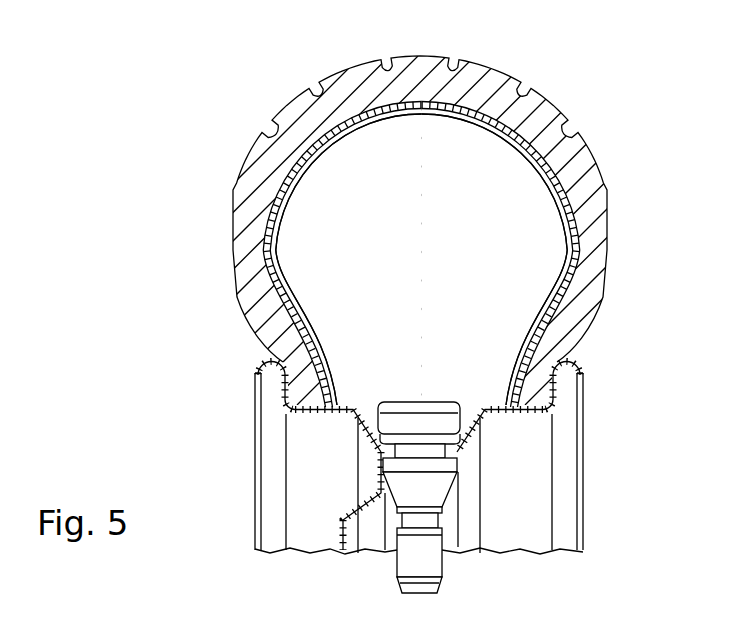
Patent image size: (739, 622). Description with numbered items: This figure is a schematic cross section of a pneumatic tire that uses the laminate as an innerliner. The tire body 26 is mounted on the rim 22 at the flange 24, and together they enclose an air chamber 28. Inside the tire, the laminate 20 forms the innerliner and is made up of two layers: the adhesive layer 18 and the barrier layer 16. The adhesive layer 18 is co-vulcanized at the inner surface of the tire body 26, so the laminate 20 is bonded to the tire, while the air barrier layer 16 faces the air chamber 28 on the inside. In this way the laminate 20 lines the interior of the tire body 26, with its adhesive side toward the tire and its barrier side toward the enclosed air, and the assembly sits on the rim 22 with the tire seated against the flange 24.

The barrier layer 16 is at (293, 190).
The adhesive layer 18 is at (327, 130).
The laminate 20 is at (337, 162).
The rim 22 is at (584, 474).
The flange 24 is at (557, 372).
The tire body 26 is at (607, 238).
The air chamber 28 is at (322, 258).